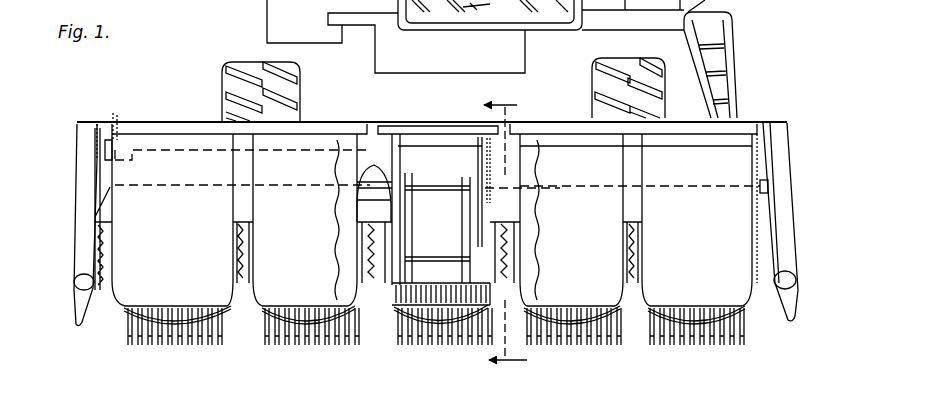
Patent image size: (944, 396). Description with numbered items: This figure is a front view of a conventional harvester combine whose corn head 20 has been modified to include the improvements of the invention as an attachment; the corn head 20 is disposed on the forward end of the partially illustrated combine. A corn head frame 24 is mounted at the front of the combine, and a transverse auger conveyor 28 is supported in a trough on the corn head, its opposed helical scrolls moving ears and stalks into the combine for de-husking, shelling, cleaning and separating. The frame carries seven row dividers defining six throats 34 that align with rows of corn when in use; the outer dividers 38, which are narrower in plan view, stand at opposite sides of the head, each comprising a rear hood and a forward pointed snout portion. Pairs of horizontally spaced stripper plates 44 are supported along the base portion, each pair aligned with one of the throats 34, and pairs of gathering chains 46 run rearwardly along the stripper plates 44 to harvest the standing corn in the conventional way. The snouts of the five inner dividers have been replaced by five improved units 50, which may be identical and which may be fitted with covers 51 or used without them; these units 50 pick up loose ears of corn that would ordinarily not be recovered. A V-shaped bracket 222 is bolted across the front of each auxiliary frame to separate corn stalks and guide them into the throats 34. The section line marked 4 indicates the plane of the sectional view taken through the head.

The corn head 20 is at (792, 116).
The corn head frame 24 is at (78, 124).
The transverse auger conveyor 28 is at (377, 168).
The throats 34 is at (375, 332).
The outer dividers 38 is at (78, 258).
The stripper plates 44 is at (234, 232).
The gathering chains 46 is at (108, 266).
The improved units 50 is at (162, 216).
The covers 51 is at (252, 182).
The V-shaped bracket 222 is at (723, 310).
The section line 4- 4 is at (505, 237).